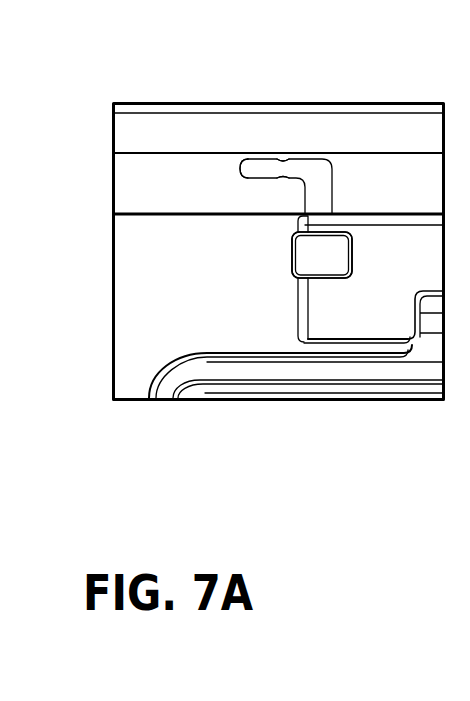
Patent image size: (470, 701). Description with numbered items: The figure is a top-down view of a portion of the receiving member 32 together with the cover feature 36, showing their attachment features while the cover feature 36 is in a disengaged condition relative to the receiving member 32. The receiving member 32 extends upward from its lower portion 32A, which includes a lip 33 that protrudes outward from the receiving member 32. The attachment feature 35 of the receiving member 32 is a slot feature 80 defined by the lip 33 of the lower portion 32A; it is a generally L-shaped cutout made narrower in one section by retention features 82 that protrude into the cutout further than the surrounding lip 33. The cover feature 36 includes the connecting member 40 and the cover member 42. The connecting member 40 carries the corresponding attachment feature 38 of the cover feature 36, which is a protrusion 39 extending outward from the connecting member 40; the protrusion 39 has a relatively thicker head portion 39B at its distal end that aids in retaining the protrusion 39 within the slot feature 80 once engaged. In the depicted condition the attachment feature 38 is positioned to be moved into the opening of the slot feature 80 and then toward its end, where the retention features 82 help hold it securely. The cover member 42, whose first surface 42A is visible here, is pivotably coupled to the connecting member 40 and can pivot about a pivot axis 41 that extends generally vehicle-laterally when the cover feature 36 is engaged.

The receiving member 32 is at (177, 137).
The lower portion 32A is at (134, 137).
The lip 33 is at (155, 197).
The attachment feature 35 is at (226, 158).
The slot feature 80 is at (256, 152).
The retention features 82 is at (281, 175).
The cover feature 36 is at (392, 287).
The attachment feature 38 is at (287, 279).
The protrusion 39 is at (291, 266).
The head portion 39B is at (303, 263).
The connecting member 40 is at (332, 315).
The pivot axis 41 is at (432, 320).
The cover member 42 is at (333, 385).
The first surface 42A is at (370, 387).